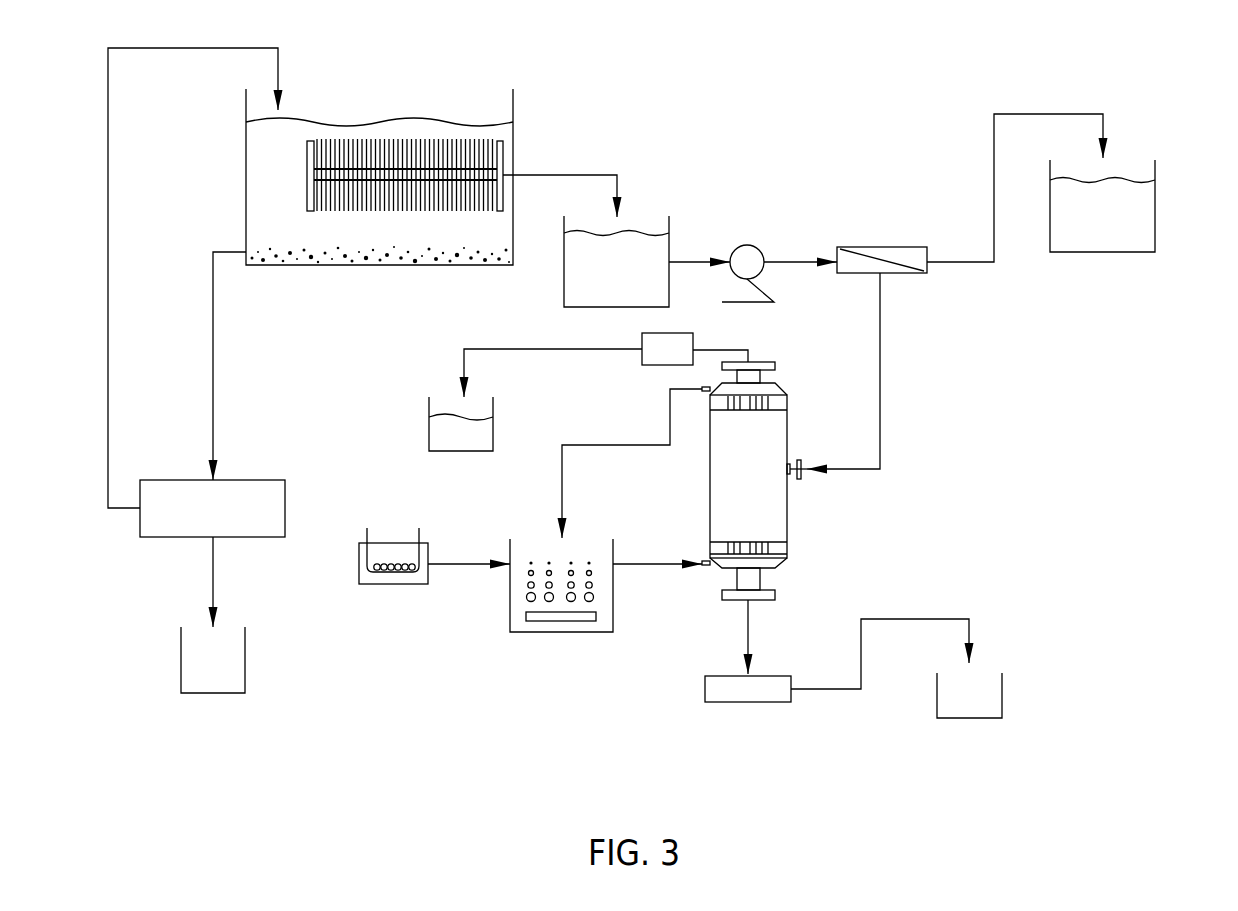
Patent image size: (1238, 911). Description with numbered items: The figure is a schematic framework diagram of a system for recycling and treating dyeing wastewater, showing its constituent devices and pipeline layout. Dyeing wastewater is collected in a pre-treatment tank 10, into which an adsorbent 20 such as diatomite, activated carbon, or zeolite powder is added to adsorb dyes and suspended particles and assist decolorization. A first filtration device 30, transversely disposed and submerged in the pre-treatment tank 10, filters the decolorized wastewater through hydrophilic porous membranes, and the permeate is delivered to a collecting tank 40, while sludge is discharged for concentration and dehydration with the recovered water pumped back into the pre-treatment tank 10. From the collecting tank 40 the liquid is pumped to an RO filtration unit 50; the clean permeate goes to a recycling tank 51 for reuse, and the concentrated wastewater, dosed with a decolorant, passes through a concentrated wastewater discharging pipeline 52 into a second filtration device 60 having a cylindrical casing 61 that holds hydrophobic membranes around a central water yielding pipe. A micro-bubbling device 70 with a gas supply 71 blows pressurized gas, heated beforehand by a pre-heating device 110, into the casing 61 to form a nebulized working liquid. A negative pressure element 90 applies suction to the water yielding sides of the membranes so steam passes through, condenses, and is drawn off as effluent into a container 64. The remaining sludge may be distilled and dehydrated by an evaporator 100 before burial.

The pre-treatment tank 10 is at (517, 133).
The adsorbent 20 is at (268, 255).
The first filtration device 30 is at (386, 144).
The collecting tank 40 is at (641, 219).
The RO filtration unit 50 is at (877, 237).
The recycling tank 51 is at (1155, 197).
The concentrated wastewater discharging pipeline 52 is at (882, 387).
The second filtration device 60 is at (805, 481).
The cylindrical casing 61 is at (781, 531).
The container 64 is at (429, 405).
The micro-bubbling device 70 is at (588, 597).
The gas supply 71 is at (552, 624).
The negative pressure element 90 is at (640, 366).
The evaporator 100 is at (748, 697).
The pre-heating device 110 is at (392, 584).